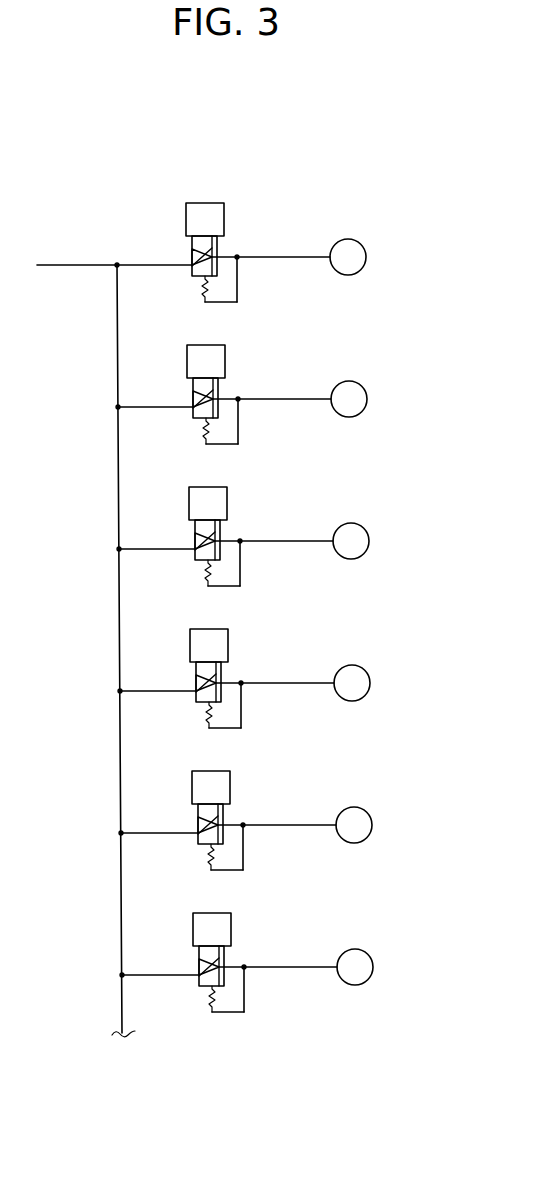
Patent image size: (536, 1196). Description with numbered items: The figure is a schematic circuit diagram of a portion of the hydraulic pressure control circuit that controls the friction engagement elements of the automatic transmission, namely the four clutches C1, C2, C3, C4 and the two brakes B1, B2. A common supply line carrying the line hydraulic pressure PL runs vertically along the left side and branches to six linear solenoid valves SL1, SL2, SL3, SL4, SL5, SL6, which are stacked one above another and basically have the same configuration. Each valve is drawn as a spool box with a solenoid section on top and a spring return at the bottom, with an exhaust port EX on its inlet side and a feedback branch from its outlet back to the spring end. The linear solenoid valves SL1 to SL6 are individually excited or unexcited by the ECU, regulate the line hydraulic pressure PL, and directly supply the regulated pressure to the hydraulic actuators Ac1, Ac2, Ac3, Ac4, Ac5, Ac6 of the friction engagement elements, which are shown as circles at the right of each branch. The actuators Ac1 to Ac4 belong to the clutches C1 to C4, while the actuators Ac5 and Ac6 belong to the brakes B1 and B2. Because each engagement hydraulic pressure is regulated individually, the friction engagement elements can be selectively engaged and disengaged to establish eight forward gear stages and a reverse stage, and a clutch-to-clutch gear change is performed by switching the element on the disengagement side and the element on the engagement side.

The line hydraulic pressure PL is at (86, 639).
The exhaust port EX is at (175, 609).
The linear solenoid valve SL1 is at (223, 252).
The linear solenoid valve SL2 is at (224, 394).
The linear solenoid valve SL3 is at (226, 536).
The linear solenoid valve SL4 is at (227, 678).
The linear solenoid valve SL5 is at (229, 820).
The linear solenoid valve SL6 is at (230, 962).
The hydraulic actuator Ac1 is at (357, 240).
The hydraulic actuator Ac2 is at (381, 386).
The hydraulic actuator Ac3 is at (383, 528).
The hydraulic actuator Ac4 is at (384, 670).
The hydraulic actuator Ac5 is at (386, 812).
The hydraulic actuator Ac6 is at (387, 954).
The clutch C1 is at (348, 257).
The clutch C2 is at (349, 399).
The clutch C3 is at (351, 541).
The clutch C4 is at (352, 683).
The brake B1 is at (354, 825).
The brake B2 is at (355, 967).